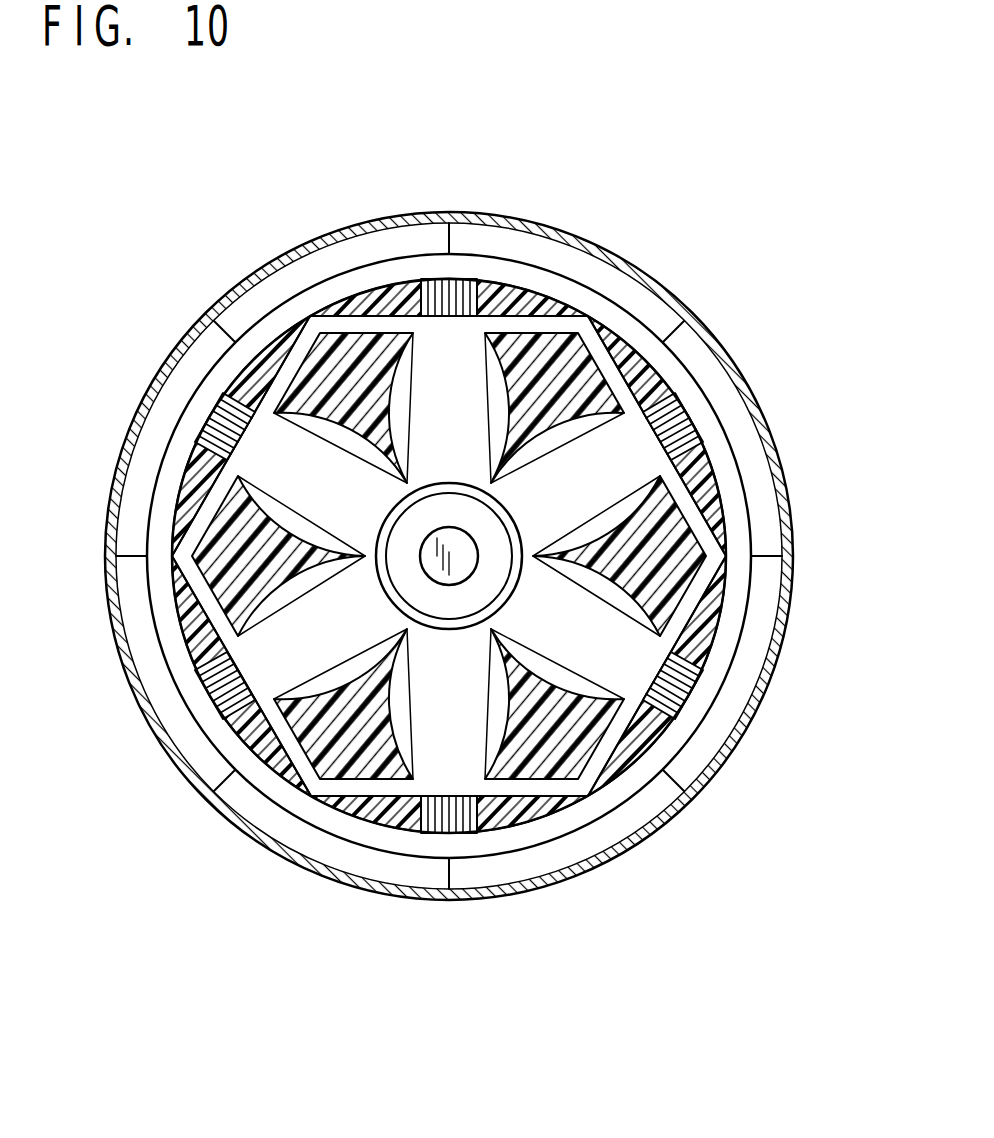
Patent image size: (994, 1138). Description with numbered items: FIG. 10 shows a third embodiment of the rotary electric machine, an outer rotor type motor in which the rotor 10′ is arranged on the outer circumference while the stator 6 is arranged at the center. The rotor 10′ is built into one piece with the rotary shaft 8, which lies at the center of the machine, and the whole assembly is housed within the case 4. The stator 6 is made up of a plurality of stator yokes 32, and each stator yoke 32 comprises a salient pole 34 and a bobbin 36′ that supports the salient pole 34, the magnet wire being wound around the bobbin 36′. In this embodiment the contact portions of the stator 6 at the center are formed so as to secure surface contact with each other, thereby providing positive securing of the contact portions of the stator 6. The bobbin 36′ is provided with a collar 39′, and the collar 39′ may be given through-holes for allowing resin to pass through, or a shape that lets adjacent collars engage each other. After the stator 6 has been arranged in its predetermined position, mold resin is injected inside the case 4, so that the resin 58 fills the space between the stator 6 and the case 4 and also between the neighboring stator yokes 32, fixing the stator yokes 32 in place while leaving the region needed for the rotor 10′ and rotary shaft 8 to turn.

The case 4 is at (743, 388).
The stator 6 is at (722, 623).
The rotary shaft 8 is at (428, 550).
The rotor 10′ is at (650, 310).
The stator yoke 32 is at (500, 832).
The salient pole 34 is at (477, 285).
The bobbin 36′ is at (283, 347).
The collar 39′ is at (282, 375).
The resin 58 is at (663, 525).